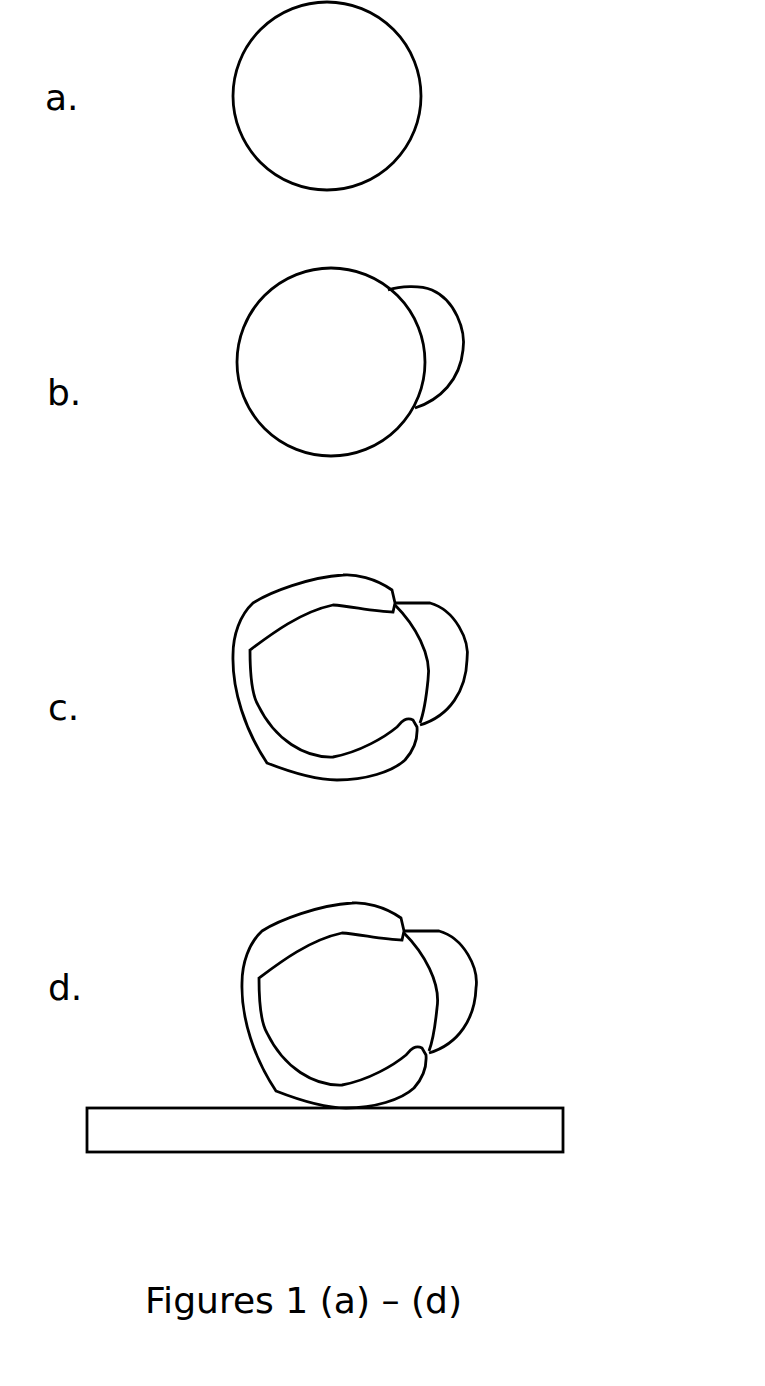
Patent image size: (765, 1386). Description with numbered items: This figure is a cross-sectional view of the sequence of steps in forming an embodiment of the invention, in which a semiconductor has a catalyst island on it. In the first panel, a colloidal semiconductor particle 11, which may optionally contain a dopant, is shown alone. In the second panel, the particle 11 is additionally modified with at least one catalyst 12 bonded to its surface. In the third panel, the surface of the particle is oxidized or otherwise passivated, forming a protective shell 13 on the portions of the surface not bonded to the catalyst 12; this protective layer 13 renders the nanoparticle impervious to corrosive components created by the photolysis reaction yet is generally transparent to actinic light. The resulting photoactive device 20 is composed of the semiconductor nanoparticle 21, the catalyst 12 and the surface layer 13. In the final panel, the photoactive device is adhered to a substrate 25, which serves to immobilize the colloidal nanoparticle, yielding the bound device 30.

The semiconductor particle 11 is at (329, 229).
The catalyst 12 is at (425, 315).
The protective shell 13 is at (295, 597).
The semiconductor nanoparticle 21 is at (379, 828).
The photoactive device 20 is at (212, 645).
The bound device 30 is at (232, 946).
The substrate 25 is at (527, 1128).